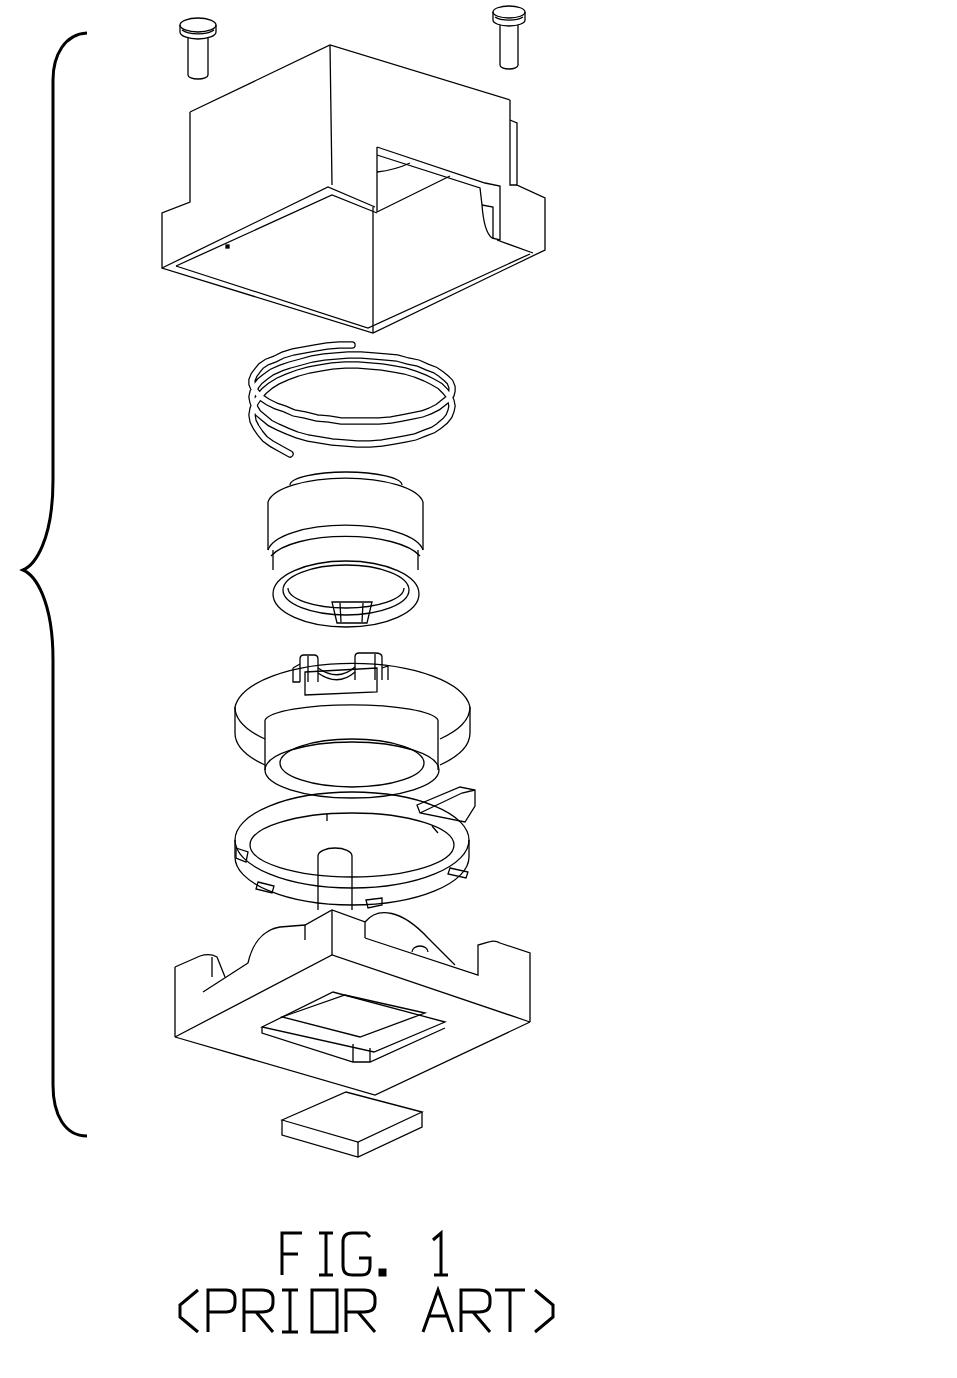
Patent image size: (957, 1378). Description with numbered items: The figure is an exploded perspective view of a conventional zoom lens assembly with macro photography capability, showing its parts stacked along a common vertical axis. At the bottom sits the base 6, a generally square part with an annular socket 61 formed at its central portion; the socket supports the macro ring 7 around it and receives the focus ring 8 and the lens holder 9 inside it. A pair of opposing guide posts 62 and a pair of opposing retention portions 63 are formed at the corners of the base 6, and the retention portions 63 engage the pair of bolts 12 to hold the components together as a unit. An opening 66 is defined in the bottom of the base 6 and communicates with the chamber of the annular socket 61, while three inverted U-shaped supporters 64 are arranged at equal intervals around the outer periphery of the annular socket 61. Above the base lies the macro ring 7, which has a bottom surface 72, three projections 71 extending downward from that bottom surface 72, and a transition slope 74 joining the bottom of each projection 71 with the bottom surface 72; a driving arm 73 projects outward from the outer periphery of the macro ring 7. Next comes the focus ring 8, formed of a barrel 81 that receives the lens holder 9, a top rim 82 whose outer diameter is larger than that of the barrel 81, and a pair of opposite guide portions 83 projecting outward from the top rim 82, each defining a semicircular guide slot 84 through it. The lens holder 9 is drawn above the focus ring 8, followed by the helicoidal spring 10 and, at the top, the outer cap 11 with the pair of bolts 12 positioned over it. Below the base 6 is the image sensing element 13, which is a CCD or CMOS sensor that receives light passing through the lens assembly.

The base 6 is at (349, 971).
The macro ring 7 is at (351, 832).
The focus ring 8 is at (356, 704).
The lens holder 9 is at (403, 512).
The helicoidal spring 10 is at (438, 425).
The outer cap 11 is at (483, 122).
The bolts 12 is at (507, 46).
The image sensing element 13 is at (395, 1130).
The annular socket 61 is at (425, 930).
The guide posts 62 is at (335, 880).
The retention portions 63 is at (192, 964).
The inverted U-shaped supporters 64 is at (430, 947).
The opening 66 is at (383, 1015).
The projections 71 is at (468, 874).
The bottom surface 72 is at (242, 856).
The driving arm 73 is at (472, 790).
The transition slope 74 is at (467, 827).
The barrel 81 is at (417, 723).
The top rim 82 is at (258, 688).
The guide portions 83 is at (303, 655).
The semicircular guide slot 84 is at (340, 660).